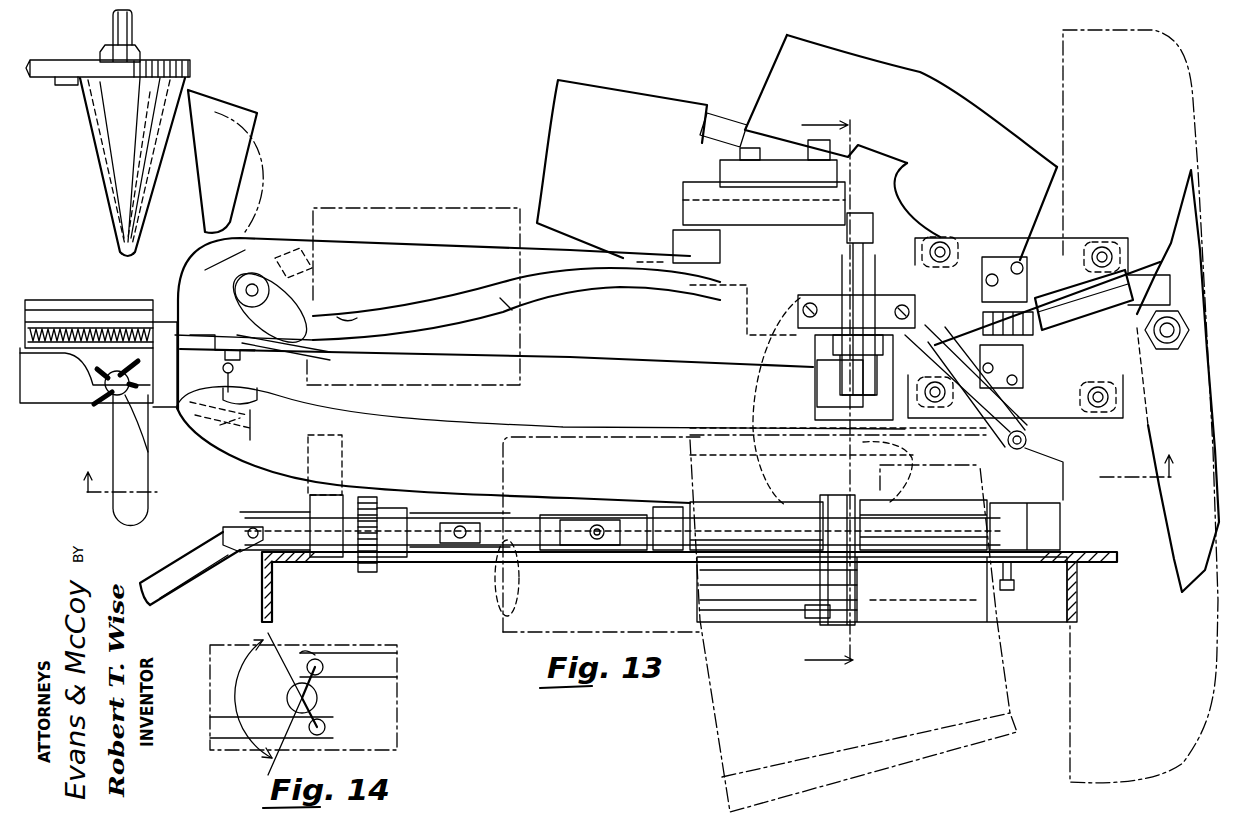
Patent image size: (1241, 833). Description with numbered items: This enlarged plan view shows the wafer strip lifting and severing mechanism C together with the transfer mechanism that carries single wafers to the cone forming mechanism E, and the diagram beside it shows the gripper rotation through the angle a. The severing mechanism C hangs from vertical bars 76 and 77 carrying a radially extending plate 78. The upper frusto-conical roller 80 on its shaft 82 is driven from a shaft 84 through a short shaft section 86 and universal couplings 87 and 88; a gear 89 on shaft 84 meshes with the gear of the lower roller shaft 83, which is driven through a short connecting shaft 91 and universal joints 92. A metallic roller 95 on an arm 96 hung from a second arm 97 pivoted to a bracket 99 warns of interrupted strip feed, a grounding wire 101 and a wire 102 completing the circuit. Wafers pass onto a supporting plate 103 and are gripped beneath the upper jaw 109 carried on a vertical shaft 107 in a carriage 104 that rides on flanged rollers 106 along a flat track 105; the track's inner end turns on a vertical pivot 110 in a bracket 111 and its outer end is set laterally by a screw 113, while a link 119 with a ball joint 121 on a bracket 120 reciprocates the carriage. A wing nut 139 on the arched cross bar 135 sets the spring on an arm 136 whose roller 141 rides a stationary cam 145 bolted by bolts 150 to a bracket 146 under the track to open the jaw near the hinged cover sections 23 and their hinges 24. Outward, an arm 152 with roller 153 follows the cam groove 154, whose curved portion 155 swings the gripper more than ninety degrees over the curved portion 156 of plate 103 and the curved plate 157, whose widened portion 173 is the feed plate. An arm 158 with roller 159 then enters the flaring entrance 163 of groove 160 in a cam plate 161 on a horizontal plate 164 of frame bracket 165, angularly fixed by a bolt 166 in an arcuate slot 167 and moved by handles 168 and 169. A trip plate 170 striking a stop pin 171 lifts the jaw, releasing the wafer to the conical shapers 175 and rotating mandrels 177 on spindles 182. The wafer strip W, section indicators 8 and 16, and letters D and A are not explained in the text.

In FIG. 13, the spindle 182 is at (112, 31).
In FIG. 13, the cone forming mechanism E is at (200, 77).
In FIG. 13, the widened portion of curved plate 173 is at (240, 112).
In FIG. 13, the conical wafer shaping member 175 is at (82, 135).
In FIG. 13, the conical mandrel 177 is at (100, 207).
In FIG. 13, the work strip W is at (260, 178).
In FIG. 13, the frame bracket 165 is at (43, 300).
In FIG. 13, the groove 160 is at (72, 330).
In FIG. 13, the cam plate 161 is at (78, 385).
In FIG. 13, the horizontal plate 164 is at (65, 400).
In FIG. 13, the flaring open inner end of groove 163 is at (140, 292).
In FIG. 13, the arcuate slot 167 is at (135, 394).
In FIG. 13, the bolt 166 is at (140, 400).
In FIG. 13, the handle 169 is at (100, 407).
In FIG. 13, the handle 168 is at (128, 505).
In FIG. 13, the section line 16 is at (627, 481).
In FIG. 13, the upper jaw 109 is at (258, 205).
In FIG. 13, the carriage 104 is at (405, 210).
In FIG. 13, the flanged rollers 106 is at (1112, 244).
In FIG. 13, the cam groove 154 is at (363, 315).
In FIG. 14, the cam groove 154 is at (400, 655).
In FIG. 13, the curved portion of cam groove 155 is at (503, 302).
In FIG. 13, the laterally extending arm 152 is at (295, 297).
In FIG. 14, the laterally extending arm 152 is at (312, 658).
In FIG. 13, the roller 153 is at (305, 345).
In FIG. 14, the roller 153 is at (330, 660).
In FIG. 13, the track 105 is at (558, 357).
In FIG. 14, the track 105 is at (400, 733).
In FIG. 13, the wafer supporting plate 103 is at (578, 425).
In FIG. 13, the trip plate 170 is at (950, 337).
In FIG. 13, the curved plate 157 is at (248, 392).
In FIG. 13, the stop pin 171 is at (205, 428).
In FIG. 13, the manually operable screw 113 is at (255, 420).
In FIG. 13, the curved portion of supporting plate 156 is at (247, 452).
In FIG. 13, the sector-shaped sections 23 is at (617, 95).
In FIG. 13, the hinges 24 is at (700, 168).
In FIG. 13, the bracket 146 is at (690, 180).
In FIG. 13, the stationary cam 145 is at (683, 208).
In FIG. 13, the bolts 150 is at (805, 158).
In FIG. 13, the roller 141 is at (838, 156).
In FIG. 13, the wing nut 139 is at (835, 266).
In FIG. 13, the drive D is at (870, 240).
In FIG. 13, the arched cross bar 135 is at (798, 308).
In FIG. 13, the arm 136 is at (815, 385).
In FIG. 13, the bracket 120 is at (998, 256).
In FIG. 13, the ball joint 121 is at (1067, 338).
In FIG. 13, the link 119 is at (1068, 295).
In FIG. 13, the bracket 111 is at (1182, 210).
In FIG. 13, the workpiece A is at (995, 152).
In FIG. 13, the vertical pivot 110 is at (1178, 362).
In FIG. 13, the laterally extending arm 158 is at (988, 440).
In FIG. 13, the roller 159 is at (1040, 463).
In FIG. 13, the strip lifting and severing mechanism C is at (923, 495).
In FIG. 13, the wire 102 is at (918, 503).
In FIG. 13, the short connecting shaft 91 is at (176, 595).
In FIG. 13, the universal joints 92 is at (232, 565).
In FIG. 13, the vertical bar 77 is at (273, 590).
In FIG. 13, the vertical bar 76 is at (1080, 600).
In FIG. 13, the shaft 83 is at (396, 548).
In FIG. 13, the shaft 84 is at (332, 500).
In FIG. 13, the gear 89 is at (372, 497).
In FIG. 13, the universal coupling 88 is at (460, 515).
In FIG. 13, the short shaft section 86 is at (560, 517).
In FIG. 13, the universal coupling 87 is at (603, 517).
In FIG. 13, the shaft 82 is at (665, 507).
In FIG. 13, the upper frusto-conical roller 80 is at (742, 505).
In FIG. 13, the bracket 99 is at (836, 497).
In FIG. 13, the section line 8 is at (827, 389).
In FIG. 13, the metallic roller 95 is at (760, 592).
In FIG. 13, the arm 96 is at (830, 618).
In FIG. 13, the second arm 97 is at (870, 628).
In FIG. 13, the grounding wire 101 is at (1007, 600).
In FIG. 13, the radially extending plate 78 is at (580, 560).
In FIG. 14, the vertical shaft 107 is at (318, 697).
In FIG. 14, the angle a is at (250, 699).